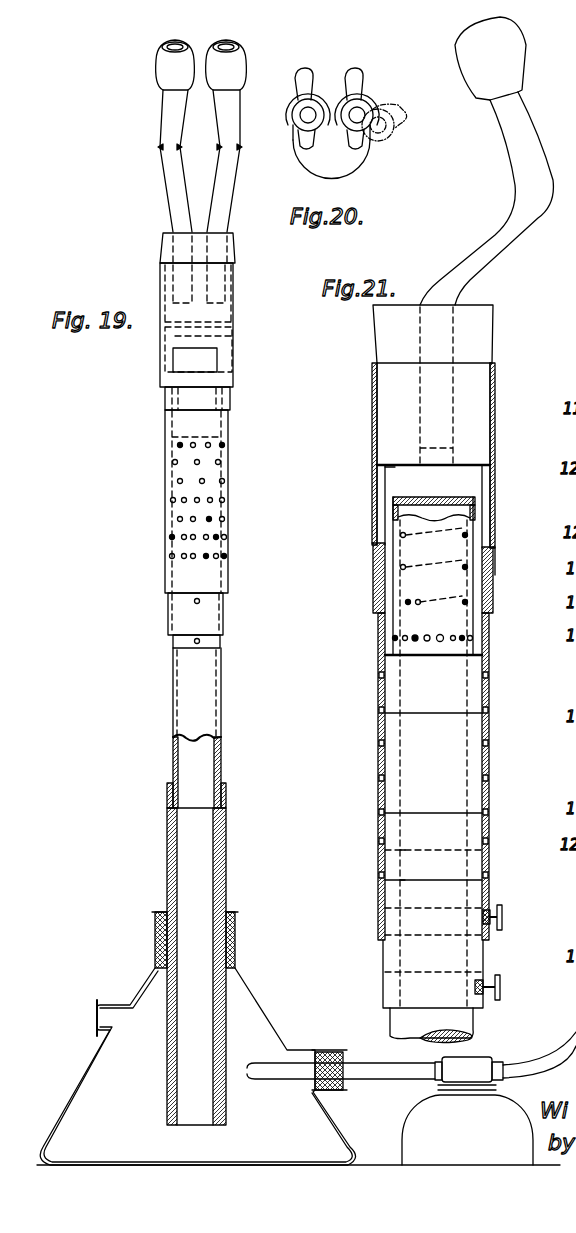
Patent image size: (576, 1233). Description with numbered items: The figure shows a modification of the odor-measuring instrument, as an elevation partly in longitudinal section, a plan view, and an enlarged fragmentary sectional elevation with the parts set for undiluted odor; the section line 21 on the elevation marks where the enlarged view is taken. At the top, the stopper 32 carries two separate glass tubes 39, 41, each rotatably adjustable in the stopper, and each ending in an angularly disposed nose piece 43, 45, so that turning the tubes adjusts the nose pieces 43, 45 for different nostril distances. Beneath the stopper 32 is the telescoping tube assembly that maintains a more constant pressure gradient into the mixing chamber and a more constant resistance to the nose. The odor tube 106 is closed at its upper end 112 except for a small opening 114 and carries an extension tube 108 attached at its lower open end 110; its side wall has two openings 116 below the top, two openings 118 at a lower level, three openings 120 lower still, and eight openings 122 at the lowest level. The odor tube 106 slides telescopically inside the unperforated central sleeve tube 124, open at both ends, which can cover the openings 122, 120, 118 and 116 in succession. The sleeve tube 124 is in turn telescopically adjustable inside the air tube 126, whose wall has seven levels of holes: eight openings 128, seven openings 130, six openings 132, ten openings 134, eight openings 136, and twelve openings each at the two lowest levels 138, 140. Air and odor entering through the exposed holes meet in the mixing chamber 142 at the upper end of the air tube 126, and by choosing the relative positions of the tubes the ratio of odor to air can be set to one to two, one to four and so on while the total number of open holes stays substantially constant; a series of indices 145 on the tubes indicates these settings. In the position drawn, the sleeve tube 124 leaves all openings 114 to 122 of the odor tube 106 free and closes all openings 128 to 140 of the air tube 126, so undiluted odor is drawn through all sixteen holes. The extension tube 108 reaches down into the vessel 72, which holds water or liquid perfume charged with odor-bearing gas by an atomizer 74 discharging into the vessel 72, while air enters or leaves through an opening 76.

In FIG. 19, the section line 21 is at (200, 70).
In FIG. 19, the stopper 32 is at (232, 234).
In FIG. 21, the stopper 32 is at (490, 346).
In FIG. 19, the glass tube 39 is at (163, 176).
In FIG. 20, the glass tube 39 is at (311, 70).
In FIG. 21, the glass tube 39 is at (540, 212).
In FIG. 19, the glass tube 41 is at (228, 172).
In FIG. 20, the glass tube 41 is at (375, 80).
In FIG. 19, the nose piece 43 is at (164, 70).
In FIG. 20, the nose piece 43 is at (293, 118).
In FIG. 21, the nose piece 43 is at (512, 62).
In FIG. 19, the nose piece 45 is at (240, 66).
In FIG. 20, the nose piece 45 is at (372, 106).
In FIG. 19, the vessel 72 is at (252, 1018).
In FIG. 19, the atomizer 74 is at (414, 1130).
In FIG. 19, the opening 76 is at (95, 1018).
In FIG. 19, the odor tube 106 is at (208, 758).
In FIG. 21, the odor tube 106 is at (390, 1030).
In FIG. 19, the extension tube 108 is at (185, 1067).
In FIG. 19, the lower open end 110 is at (189, 808).
In FIG. 19, the upper end 112 is at (210, 354).
In FIG. 21, the upper end 112 is at (455, 497).
In FIG. 19, the small opening 114 is at (195, 352).
In FIG. 21, the small opening 114 is at (432, 497).
In FIG. 21, the openings 116 is at (478, 530).
In FIG. 21, the openings 118 is at (480, 560).
In FIG. 21, the openings 120 is at (475, 600).
In FIG. 21, the openings 122 is at (440, 640).
In FIG. 19, the central sleeve tube 124 is at (223, 611).
In FIG. 21, the central sleeve tube 124 is at (455, 696).
In FIG. 19, the air tube 126 is at (165, 575).
In FIG. 21, the air tube 126 is at (375, 596).
In FIG. 19, the openings 128 is at (242, 444).
In FIG. 21, the openings 128 is at (380, 676).
In FIG. 19, the openings 130 is at (200, 464).
In FIG. 21, the openings 130 is at (380, 710).
In FIG. 19, the openings 132 is at (202, 482).
In FIG. 21, the openings 132 is at (380, 743).
In FIG. 19, the openings 134 is at (185, 500).
In FIG. 21, the openings 134 is at (380, 777).
In FIG. 19, the openings 136 is at (209, 520).
In FIG. 21, the openings 136 is at (380, 812).
In FIG. 19, the openings 138 is at (172, 538).
In FIG. 21, the openings 138 is at (490, 840).
In FIG. 19, the openings 140 is at (222, 557).
In FIG. 21, the openings 140 is at (380, 875).
In FIG. 19, the mixing chamber 142 is at (230, 334).
In FIG. 21, the mixing chamber 142 is at (375, 478).
In FIG. 21, the indices 145 is at (405, 880).